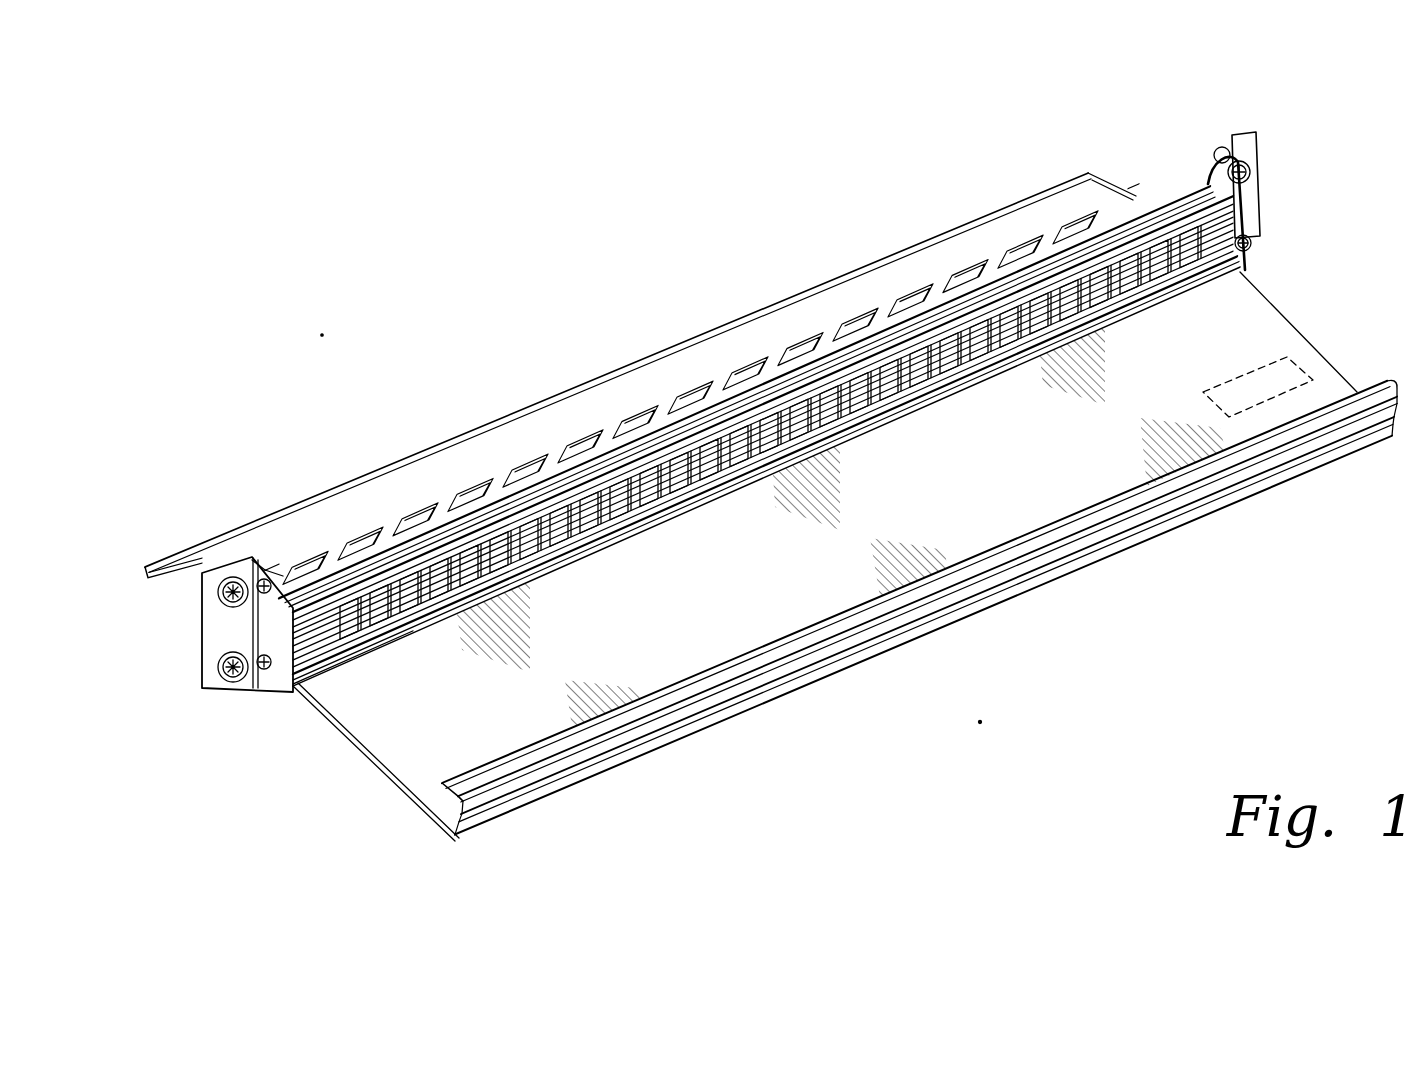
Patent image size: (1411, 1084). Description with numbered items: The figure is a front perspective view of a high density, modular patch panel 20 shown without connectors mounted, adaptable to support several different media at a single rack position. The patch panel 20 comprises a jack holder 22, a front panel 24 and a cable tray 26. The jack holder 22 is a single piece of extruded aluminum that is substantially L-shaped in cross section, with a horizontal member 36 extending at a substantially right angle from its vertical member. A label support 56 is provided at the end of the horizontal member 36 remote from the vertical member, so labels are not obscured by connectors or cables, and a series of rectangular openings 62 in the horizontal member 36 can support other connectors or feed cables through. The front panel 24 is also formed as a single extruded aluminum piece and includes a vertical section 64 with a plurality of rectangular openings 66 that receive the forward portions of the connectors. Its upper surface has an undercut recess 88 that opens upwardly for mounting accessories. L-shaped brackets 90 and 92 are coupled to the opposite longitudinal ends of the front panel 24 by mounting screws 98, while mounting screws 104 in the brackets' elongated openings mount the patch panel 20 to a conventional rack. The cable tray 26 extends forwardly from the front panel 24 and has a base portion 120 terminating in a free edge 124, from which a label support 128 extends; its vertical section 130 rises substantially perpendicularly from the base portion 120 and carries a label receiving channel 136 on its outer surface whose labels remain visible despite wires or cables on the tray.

The patch panel 20 is at (1142, 163).
The jack holder 22 is at (657, 367).
The front panel 24 is at (376, 640).
The cable tray 26 is at (416, 768).
The horizontal member 36 is at (823, 305).
The label support 56 is at (551, 402).
The rectangular openings 62 is at (918, 280).
The vertical section 64 is at (610, 518).
The rectangular openings 66 is at (742, 486).
The undercut recess 88 is at (409, 532).
The bracket 90 is at (270, 704).
The bracket 92 is at (1272, 206).
The mounting screws 98 is at (268, 556).
The mounting screws 104 is at (1252, 166).
The base portion 120 is at (786, 571).
The free edge 124 is at (450, 847).
The label support 128 is at (1030, 556).
The vertical section 130 is at (1398, 432).
The label receiving channel 136 is at (700, 727).